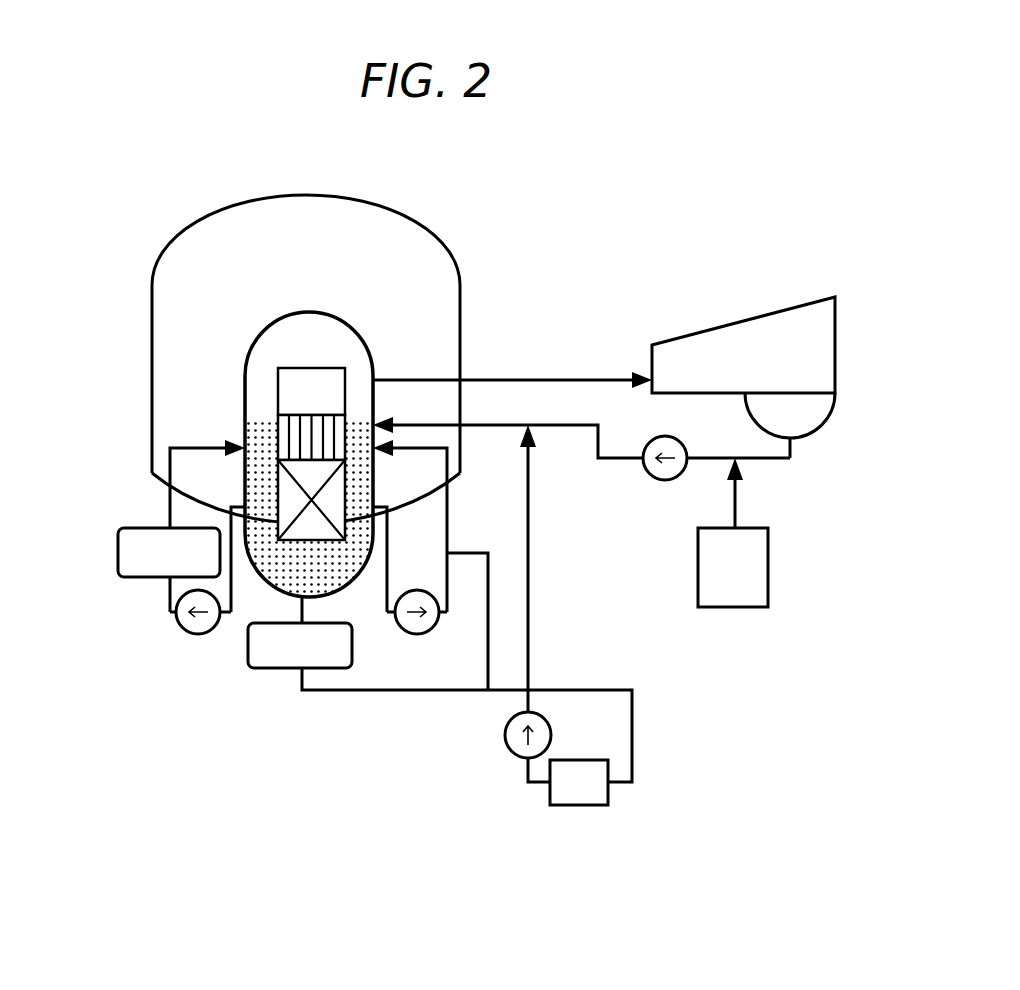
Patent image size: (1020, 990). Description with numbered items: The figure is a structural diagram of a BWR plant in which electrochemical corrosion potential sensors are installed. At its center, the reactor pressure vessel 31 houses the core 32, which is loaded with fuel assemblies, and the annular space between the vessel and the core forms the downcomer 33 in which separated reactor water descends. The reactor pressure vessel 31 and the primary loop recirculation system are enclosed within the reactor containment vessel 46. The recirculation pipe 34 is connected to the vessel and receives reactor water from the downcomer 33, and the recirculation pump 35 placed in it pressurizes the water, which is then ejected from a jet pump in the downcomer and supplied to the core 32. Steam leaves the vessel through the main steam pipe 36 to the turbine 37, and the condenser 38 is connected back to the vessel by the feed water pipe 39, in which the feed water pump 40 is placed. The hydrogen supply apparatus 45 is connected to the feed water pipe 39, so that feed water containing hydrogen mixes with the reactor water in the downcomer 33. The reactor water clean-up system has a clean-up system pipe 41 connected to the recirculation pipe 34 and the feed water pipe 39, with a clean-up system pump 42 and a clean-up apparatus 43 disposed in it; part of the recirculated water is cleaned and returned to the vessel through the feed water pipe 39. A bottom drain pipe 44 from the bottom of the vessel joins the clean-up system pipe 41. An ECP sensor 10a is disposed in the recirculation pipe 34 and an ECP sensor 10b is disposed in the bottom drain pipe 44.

The reactor containment vessel 46 is at (197, 232).
The reactor pressure vessel 31 is at (362, 337).
The core 32 is at (300, 457).
The downcomer 33 is at (258, 482).
The recirculation pipe 34 is at (168, 593).
The recirculation pump 35 is at (183, 632).
The main steam pipe 36 is at (514, 378).
The turbine 37 is at (733, 322).
The condenser 38 is at (808, 437).
The feed water pipe 39 is at (615, 460).
The feed water pump 40 is at (661, 480).
The clean-up system pipe 41 is at (528, 785).
The clean-up system pump 42 is at (505, 750).
The clean-up apparatus 43 is at (580, 805).
The bottom drain pipe 44 is at (303, 692).
The hydrogen supply apparatus 45 is at (735, 607).
The ECP sensor 10a is at (118, 555).
The ECP sensor 10b is at (268, 668).